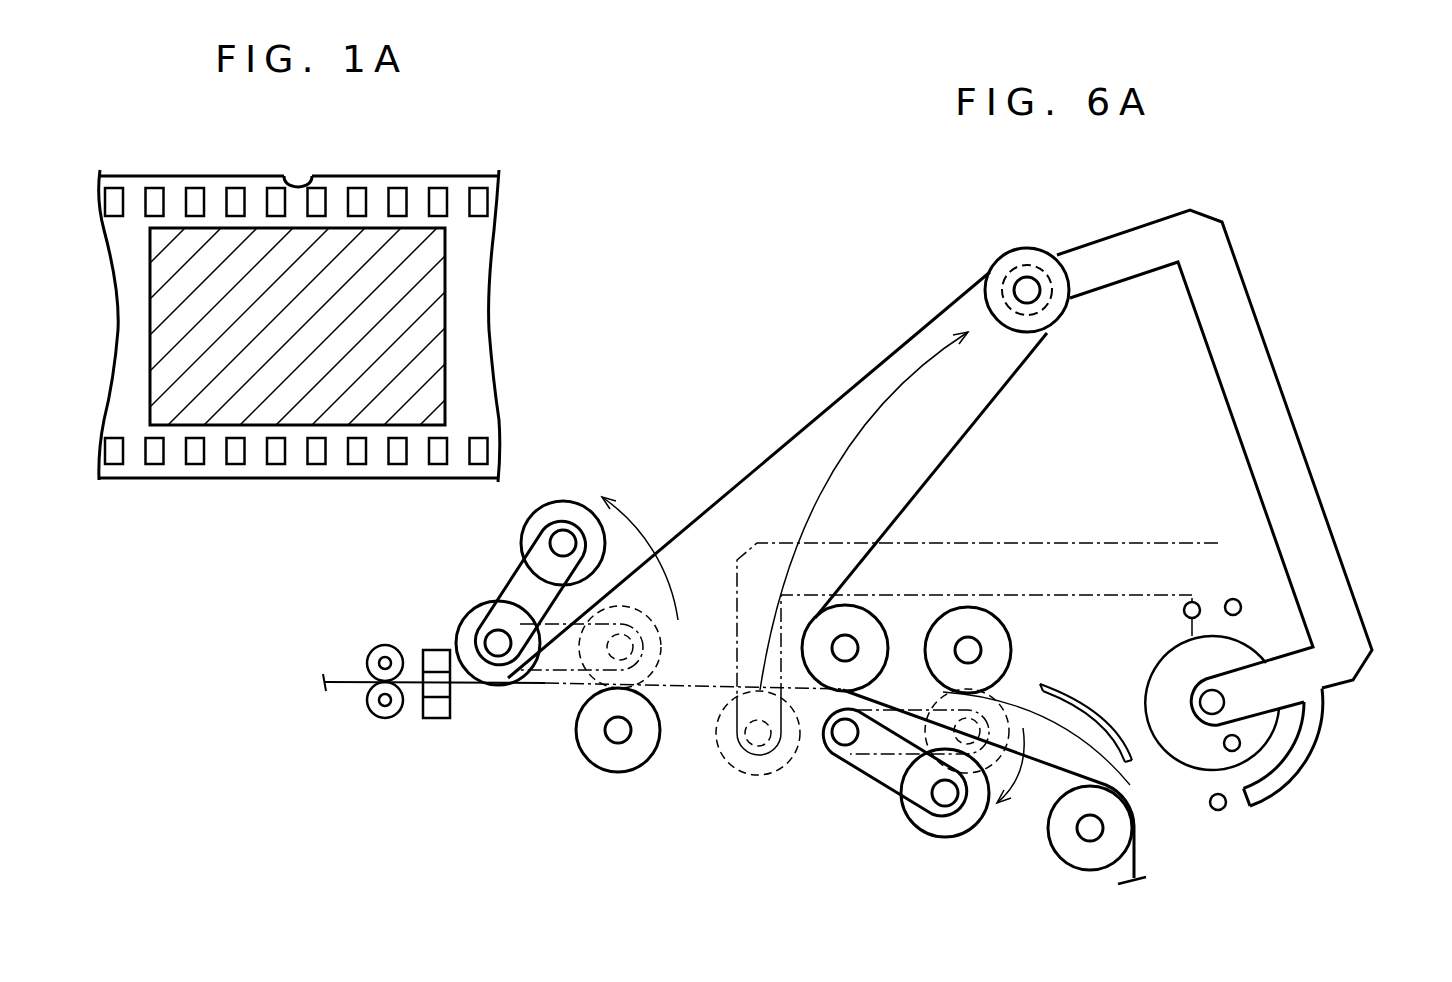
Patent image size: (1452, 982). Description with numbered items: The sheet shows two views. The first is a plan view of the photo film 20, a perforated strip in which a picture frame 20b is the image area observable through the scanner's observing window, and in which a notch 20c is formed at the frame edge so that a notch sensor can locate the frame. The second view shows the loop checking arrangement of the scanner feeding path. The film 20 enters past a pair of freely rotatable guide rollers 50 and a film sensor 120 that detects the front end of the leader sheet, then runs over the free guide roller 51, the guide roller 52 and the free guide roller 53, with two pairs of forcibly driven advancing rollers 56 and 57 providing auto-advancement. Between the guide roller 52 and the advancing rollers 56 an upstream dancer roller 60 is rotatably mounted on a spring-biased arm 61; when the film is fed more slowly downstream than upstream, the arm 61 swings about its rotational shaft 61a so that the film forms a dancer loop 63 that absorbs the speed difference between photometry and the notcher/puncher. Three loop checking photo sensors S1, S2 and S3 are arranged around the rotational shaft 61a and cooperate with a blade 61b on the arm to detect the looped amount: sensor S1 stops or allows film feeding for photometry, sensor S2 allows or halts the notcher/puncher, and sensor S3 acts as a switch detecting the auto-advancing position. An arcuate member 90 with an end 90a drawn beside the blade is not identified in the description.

In FIG. 1A, the photo film 20 is at (376, 462).
In FIG. 1A, the picture frame 20b is at (258, 415).
In FIG. 1A, the notch 20c is at (298, 188).
In FIG. 6A, the guide rollers 50 is at (385, 718).
In FIG. 6A, the film sensor 120 is at (437, 718).
In FIG. 6A, the free guide roller 51 is at (500, 686).
In FIG. 6A, the guide roller 52 is at (862, 620).
In FIG. 6A, the free guide roller 53 is at (1055, 838).
In FIG. 6A, the advancing rollers 56 is at (612, 772).
In FIG. 6A, the advancing rollers 57 is at (1012, 652).
In FIG. 6A, the upstream dancer roller 60 is at (1032, 248).
In FIG. 6A, the arm 61 is at (1270, 362).
In FIG. 6A, the rotational shaft 61a is at (1216, 698).
In FIG. 6A, the blade 61b is at (1305, 752).
In FIG. 6A, the dancer loop 63 is at (930, 320).
In FIG. 6A, the guide member 90 is at (1280, 724).
In FIG. 6A, the end of guide member 90a is at (1266, 800).
In FIG. 6A, the loop checking sensor S1 is at (1243, 598).
In FIG. 6A, the loop checking sensor S2 is at (1218, 811).
In FIG. 6A, the loop checking sensor S3 is at (1183, 612).